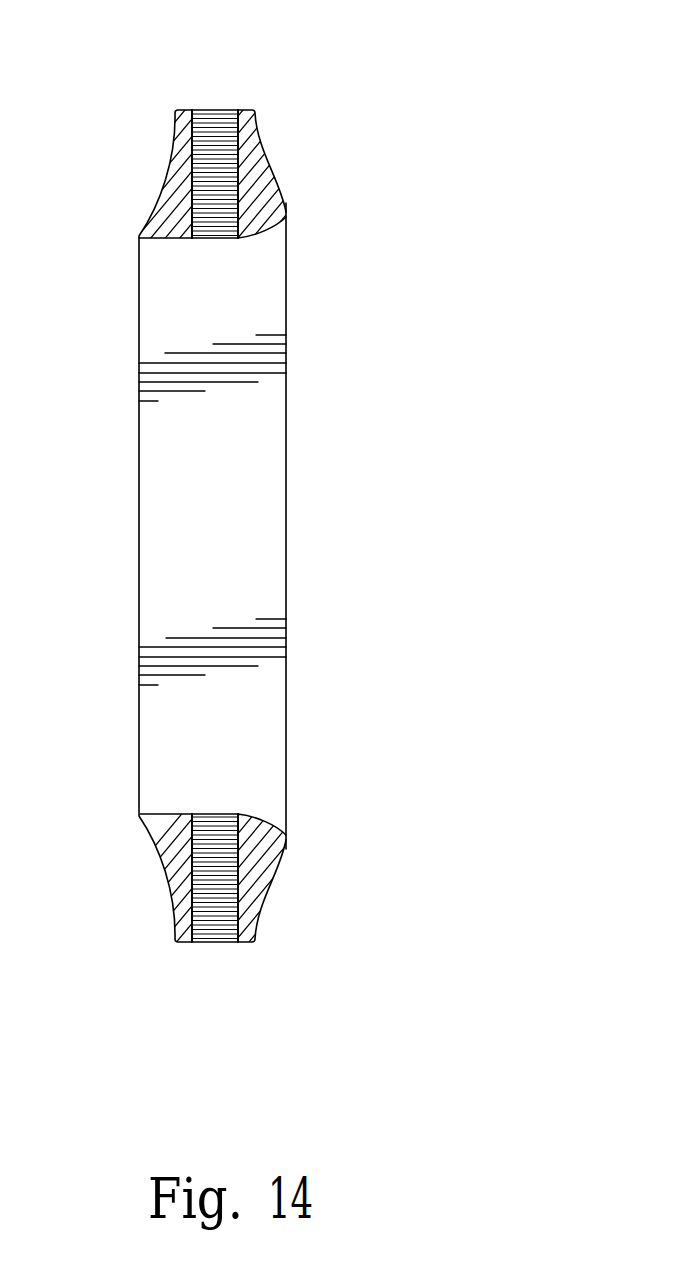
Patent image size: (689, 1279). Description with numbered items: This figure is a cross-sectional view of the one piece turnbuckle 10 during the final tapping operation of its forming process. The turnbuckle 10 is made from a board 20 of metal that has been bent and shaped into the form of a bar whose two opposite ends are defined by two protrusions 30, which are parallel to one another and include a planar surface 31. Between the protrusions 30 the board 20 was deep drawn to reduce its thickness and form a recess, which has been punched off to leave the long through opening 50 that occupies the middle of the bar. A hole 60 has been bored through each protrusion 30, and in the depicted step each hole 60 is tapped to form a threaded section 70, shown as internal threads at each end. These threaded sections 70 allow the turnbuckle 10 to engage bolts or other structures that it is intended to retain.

The turnbuckle 10 is at (482, 974).
The board 20 is at (140, 829).
The protrusion 30 is at (253, 153).
The planar surface 31 is at (187, 108).
The through opening 50 is at (252, 500).
The hole 60 is at (221, 121).
The threaded section 70 is at (238, 182).